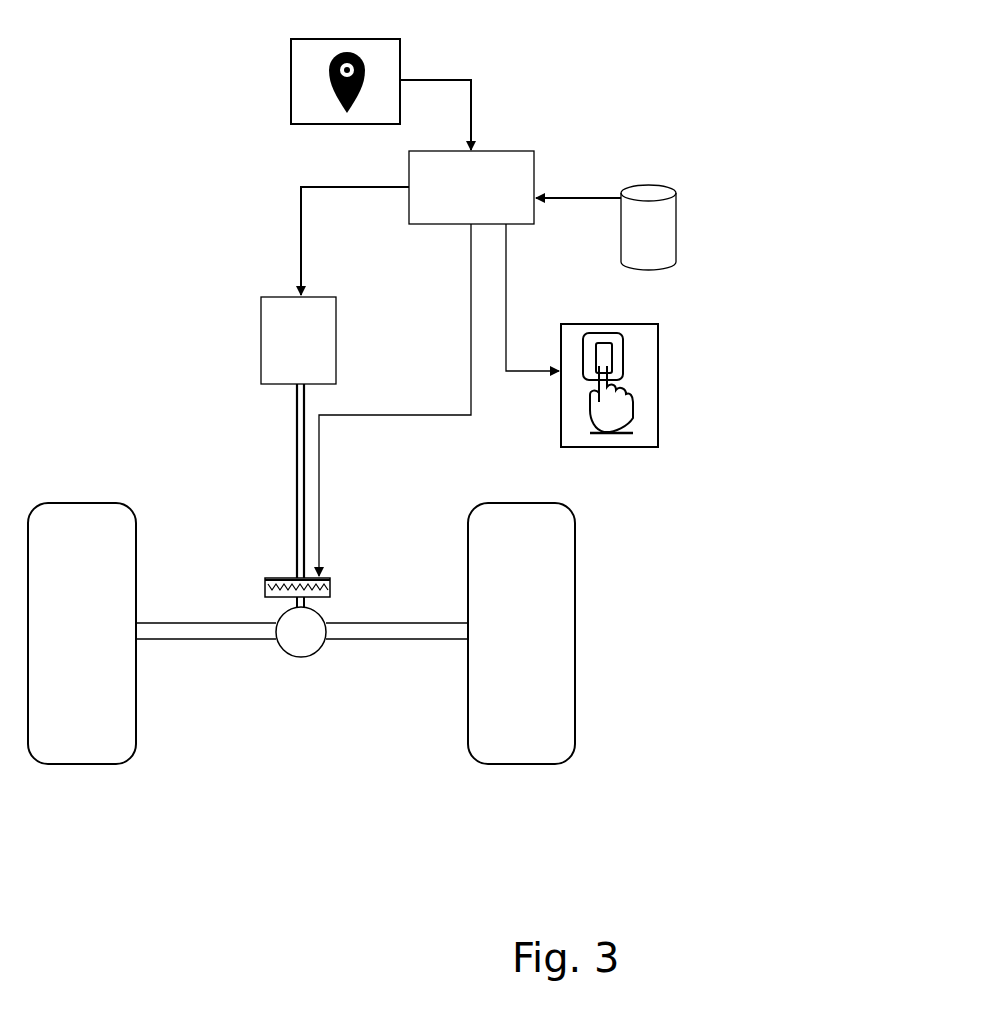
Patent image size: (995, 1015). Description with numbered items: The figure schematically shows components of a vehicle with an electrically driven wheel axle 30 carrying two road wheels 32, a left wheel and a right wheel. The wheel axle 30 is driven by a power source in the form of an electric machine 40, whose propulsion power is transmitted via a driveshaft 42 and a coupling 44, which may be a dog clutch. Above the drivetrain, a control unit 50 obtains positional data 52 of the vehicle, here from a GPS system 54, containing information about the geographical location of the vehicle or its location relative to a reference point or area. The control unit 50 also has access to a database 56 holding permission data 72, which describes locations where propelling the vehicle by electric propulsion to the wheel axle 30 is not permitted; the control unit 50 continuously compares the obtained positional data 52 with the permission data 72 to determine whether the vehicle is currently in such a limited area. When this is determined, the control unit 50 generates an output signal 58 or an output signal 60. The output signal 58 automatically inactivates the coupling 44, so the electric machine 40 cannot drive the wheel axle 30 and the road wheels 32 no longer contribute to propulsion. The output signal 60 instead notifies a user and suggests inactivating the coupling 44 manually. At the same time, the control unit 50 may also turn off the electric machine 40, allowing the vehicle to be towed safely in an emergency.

The wheel axle 30 is at (200, 641).
The road wheels 32 is at (92, 764).
The electric machine 40 is at (261, 332).
The driveshaft 42 is at (295, 453).
The coupling 44 is at (290, 578).
The control unit 50 is at (534, 165).
The positional data 52 is at (440, 80).
The GPS system 54 is at (291, 68).
The database 56 is at (650, 186).
The output signal 58 is at (390, 415).
The output signal 60 is at (506, 297).
The permission data 72 is at (572, 200).